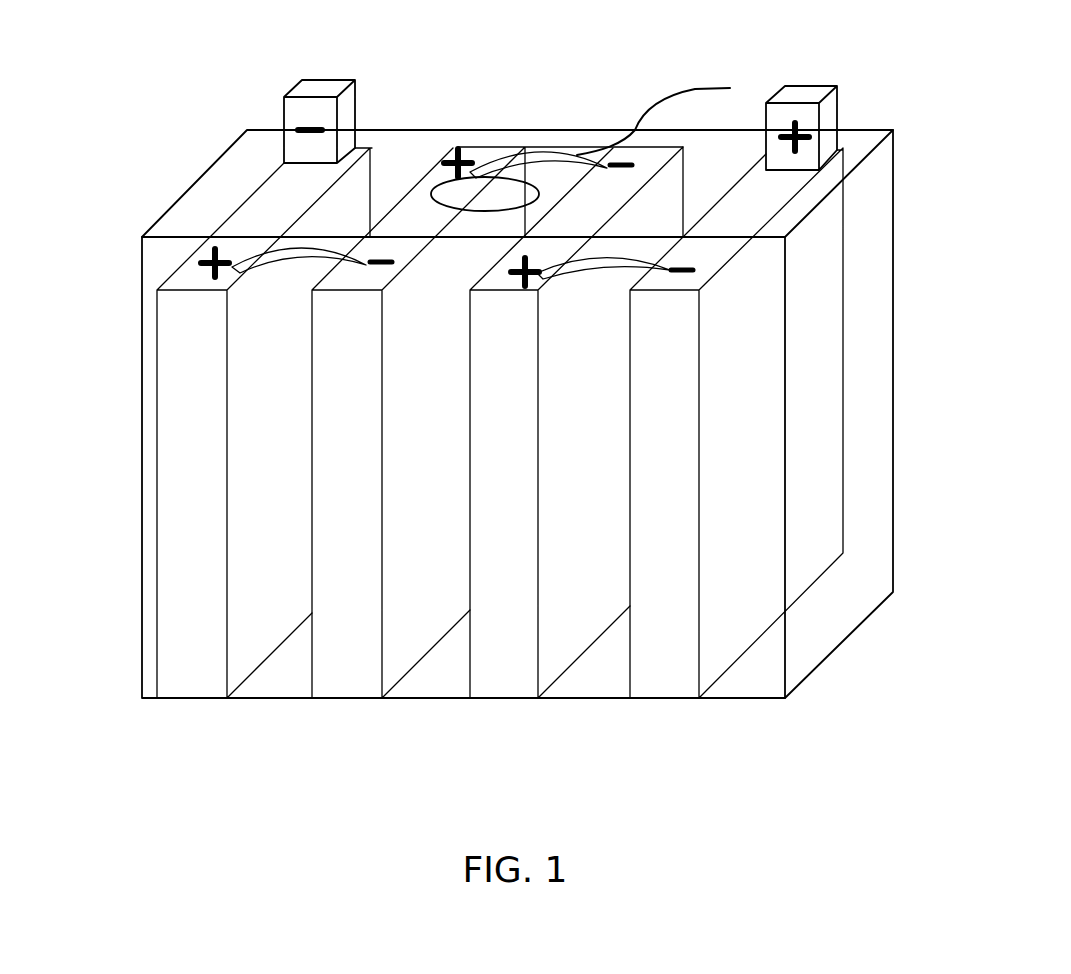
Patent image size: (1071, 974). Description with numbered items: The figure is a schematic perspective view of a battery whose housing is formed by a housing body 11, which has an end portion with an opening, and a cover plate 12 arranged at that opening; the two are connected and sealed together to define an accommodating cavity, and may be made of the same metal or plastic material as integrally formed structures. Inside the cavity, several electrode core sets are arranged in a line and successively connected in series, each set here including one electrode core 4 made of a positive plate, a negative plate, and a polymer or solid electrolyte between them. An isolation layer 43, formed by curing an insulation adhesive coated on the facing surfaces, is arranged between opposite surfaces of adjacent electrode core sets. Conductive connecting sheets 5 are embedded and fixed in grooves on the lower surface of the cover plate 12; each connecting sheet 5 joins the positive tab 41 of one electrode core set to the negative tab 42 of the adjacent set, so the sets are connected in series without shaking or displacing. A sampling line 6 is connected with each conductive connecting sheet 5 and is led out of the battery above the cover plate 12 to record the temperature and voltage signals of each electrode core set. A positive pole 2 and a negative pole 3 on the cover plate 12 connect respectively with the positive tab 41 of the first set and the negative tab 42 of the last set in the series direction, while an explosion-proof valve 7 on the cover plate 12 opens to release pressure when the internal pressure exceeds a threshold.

The housing body 11 is at (140, 593).
The cover plate 12 is at (240, 190).
The positive pole 2 is at (823, 132).
The negative pole 3 is at (297, 110).
The electrode core 4 is at (167, 320).
The positive tab 41 is at (217, 272).
The negative tab 42 is at (690, 273).
The isolation layer 43 is at (270, 590).
The conductive connecting sheet 5 is at (315, 242).
The sampling line 6 is at (645, 108).
The explosion-proof valve 7 is at (472, 195).